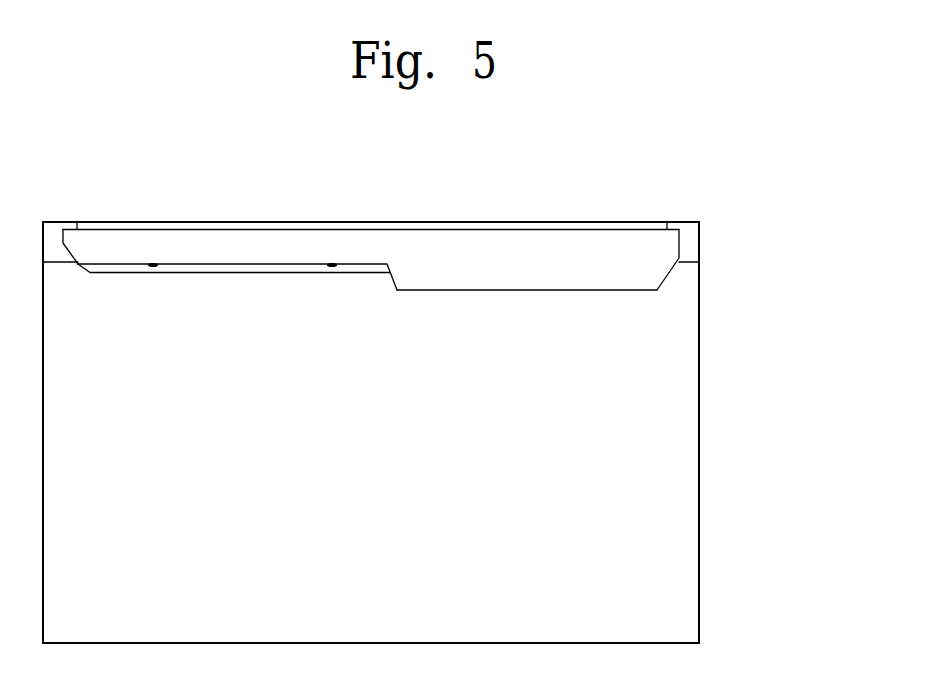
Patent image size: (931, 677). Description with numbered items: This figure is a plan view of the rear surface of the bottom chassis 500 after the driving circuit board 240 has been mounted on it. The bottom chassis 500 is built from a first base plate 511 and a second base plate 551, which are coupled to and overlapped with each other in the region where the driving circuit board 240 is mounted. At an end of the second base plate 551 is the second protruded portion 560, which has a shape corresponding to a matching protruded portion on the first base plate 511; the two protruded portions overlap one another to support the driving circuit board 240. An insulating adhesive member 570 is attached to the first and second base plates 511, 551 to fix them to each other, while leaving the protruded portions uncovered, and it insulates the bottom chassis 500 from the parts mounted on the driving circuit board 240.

The bottom chassis 500 is at (785, 230).
The second base plate 551 is at (690, 443).
The first base plate 511 is at (688, 243).
The insulating adhesive member 570 is at (103, 272).
The driving circuit board 240 is at (543, 280).
The second protruded portion 560 is at (155, 266).